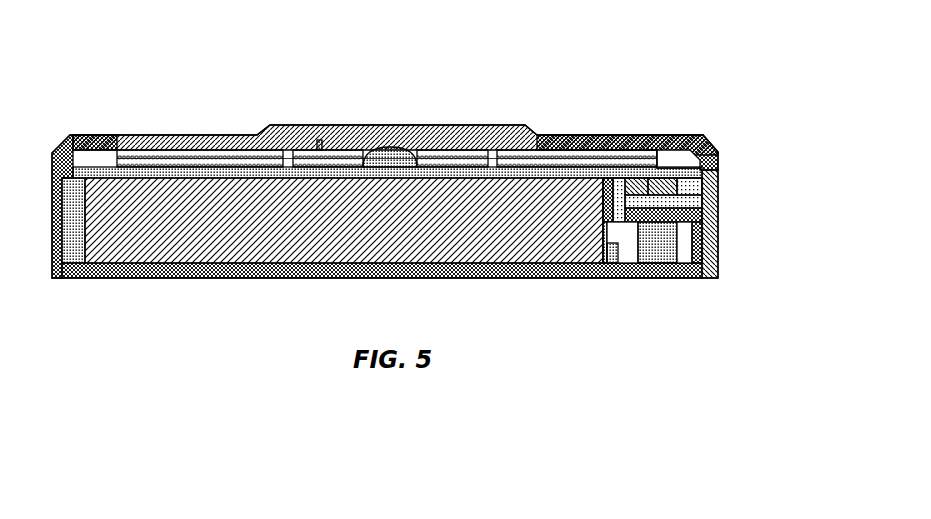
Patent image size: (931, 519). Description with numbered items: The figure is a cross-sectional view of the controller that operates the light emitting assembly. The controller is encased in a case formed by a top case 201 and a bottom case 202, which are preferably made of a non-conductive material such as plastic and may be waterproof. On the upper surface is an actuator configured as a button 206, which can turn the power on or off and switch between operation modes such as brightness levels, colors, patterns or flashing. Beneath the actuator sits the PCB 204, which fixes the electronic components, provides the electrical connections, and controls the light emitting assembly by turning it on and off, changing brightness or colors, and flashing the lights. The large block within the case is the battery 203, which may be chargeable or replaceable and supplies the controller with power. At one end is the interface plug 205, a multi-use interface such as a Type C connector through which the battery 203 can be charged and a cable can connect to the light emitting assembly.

The top case 201 is at (128, 155).
The bottom case 202 is at (156, 265).
The battery 203 is at (490, 233).
The PCB 204 is at (602, 153).
The interface plug 205 is at (701, 208).
The button 206 is at (398, 125).